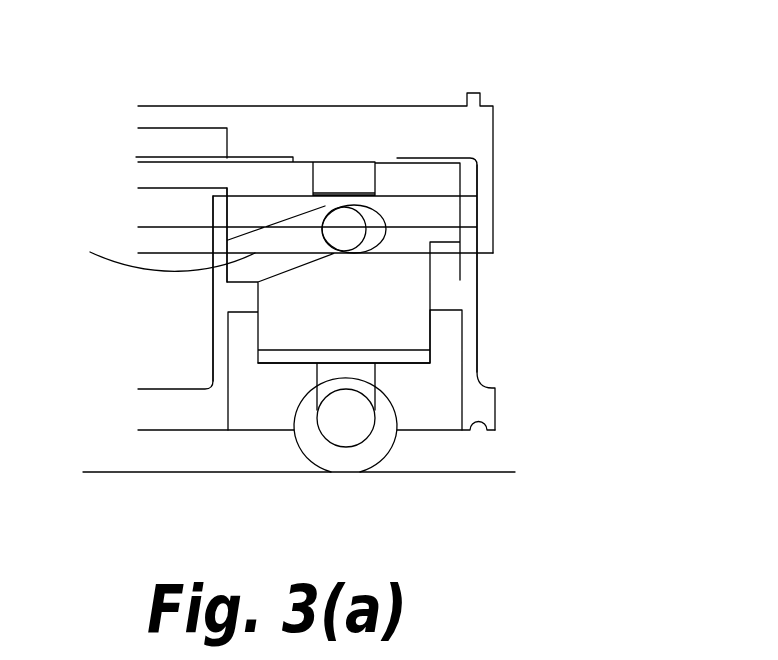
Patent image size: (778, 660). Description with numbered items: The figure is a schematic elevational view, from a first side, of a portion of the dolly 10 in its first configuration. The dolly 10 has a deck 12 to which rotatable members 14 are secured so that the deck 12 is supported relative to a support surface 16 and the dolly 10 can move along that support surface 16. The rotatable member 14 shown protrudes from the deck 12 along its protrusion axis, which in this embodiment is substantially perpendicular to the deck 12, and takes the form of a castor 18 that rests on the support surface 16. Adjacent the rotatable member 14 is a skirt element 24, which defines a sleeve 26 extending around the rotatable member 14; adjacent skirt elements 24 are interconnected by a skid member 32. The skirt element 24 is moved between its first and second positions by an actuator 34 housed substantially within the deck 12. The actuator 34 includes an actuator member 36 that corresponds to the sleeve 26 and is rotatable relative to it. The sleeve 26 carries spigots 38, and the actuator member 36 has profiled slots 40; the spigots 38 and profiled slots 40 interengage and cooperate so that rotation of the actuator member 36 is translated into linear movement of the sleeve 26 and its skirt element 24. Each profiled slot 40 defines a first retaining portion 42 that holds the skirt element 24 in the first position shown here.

The dolly 10 is at (563, 188).
The deck 12 is at (283, 123).
The rotatable member 14 is at (315, 443).
The support surface 16 is at (468, 472).
The castor 18 is at (352, 458).
The skirt element 24 is at (483, 397).
The sleeve 26 is at (470, 363).
The skid member 32 is at (172, 413).
The actuator 34 is at (150, 288).
The actuator member 36 is at (397, 313).
The spigot 38 is at (342, 237).
The profiled slot 40 is at (157, 256).
The first retaining portion 42 is at (387, 218).